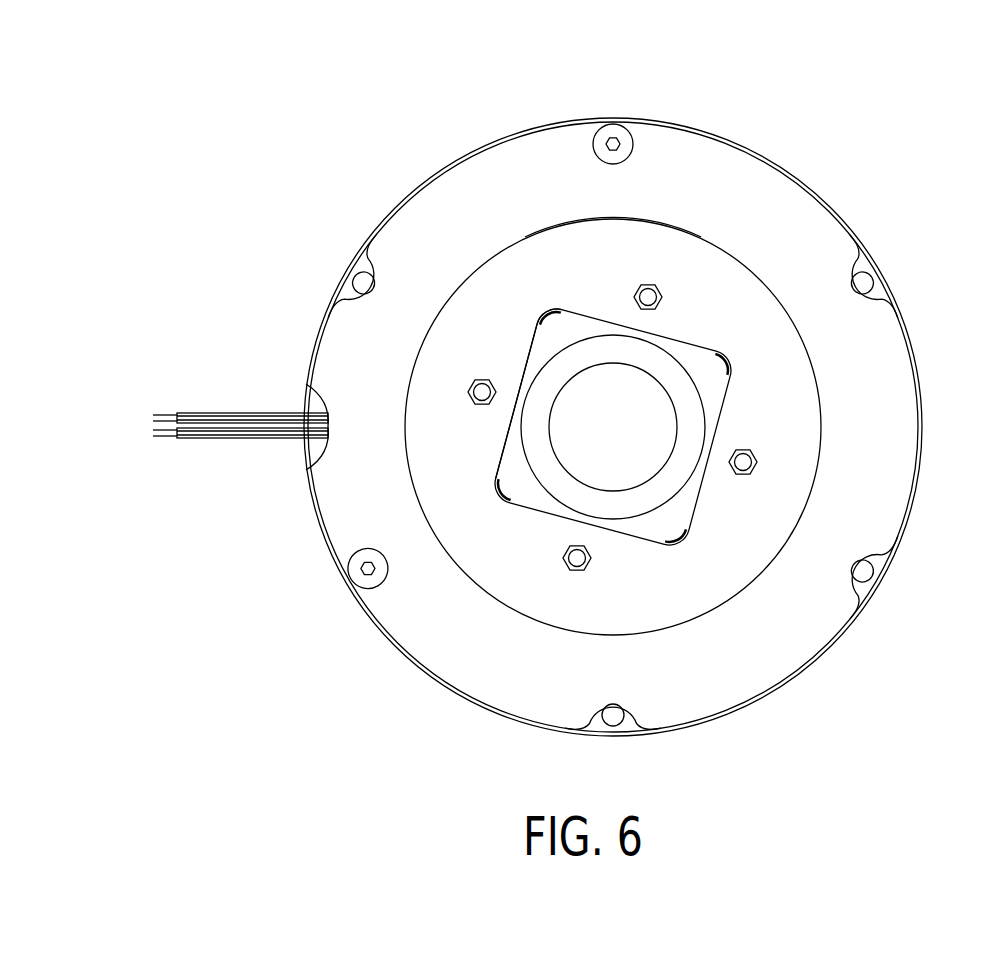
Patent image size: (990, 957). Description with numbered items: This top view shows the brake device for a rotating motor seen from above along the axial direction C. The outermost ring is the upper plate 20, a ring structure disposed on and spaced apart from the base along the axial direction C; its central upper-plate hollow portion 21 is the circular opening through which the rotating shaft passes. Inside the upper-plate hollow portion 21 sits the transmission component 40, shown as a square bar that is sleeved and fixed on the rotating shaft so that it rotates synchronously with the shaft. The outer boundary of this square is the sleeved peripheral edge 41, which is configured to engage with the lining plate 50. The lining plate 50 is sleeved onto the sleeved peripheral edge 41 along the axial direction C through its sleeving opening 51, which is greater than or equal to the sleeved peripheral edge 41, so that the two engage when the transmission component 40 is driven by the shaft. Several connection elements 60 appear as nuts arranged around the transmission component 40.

The upper plate 20 is at (745, 182).
The upper-plate hollow portion 21 is at (651, 217).
The transmission component 40 is at (718, 400).
The sleeved peripheral edge 41 is at (512, 348).
The lining plate 50 is at (725, 285).
The sleeving opening 51 is at (537, 297).
The connection elements 60 is at (754, 467).
The axial direction C is at (612, 427).